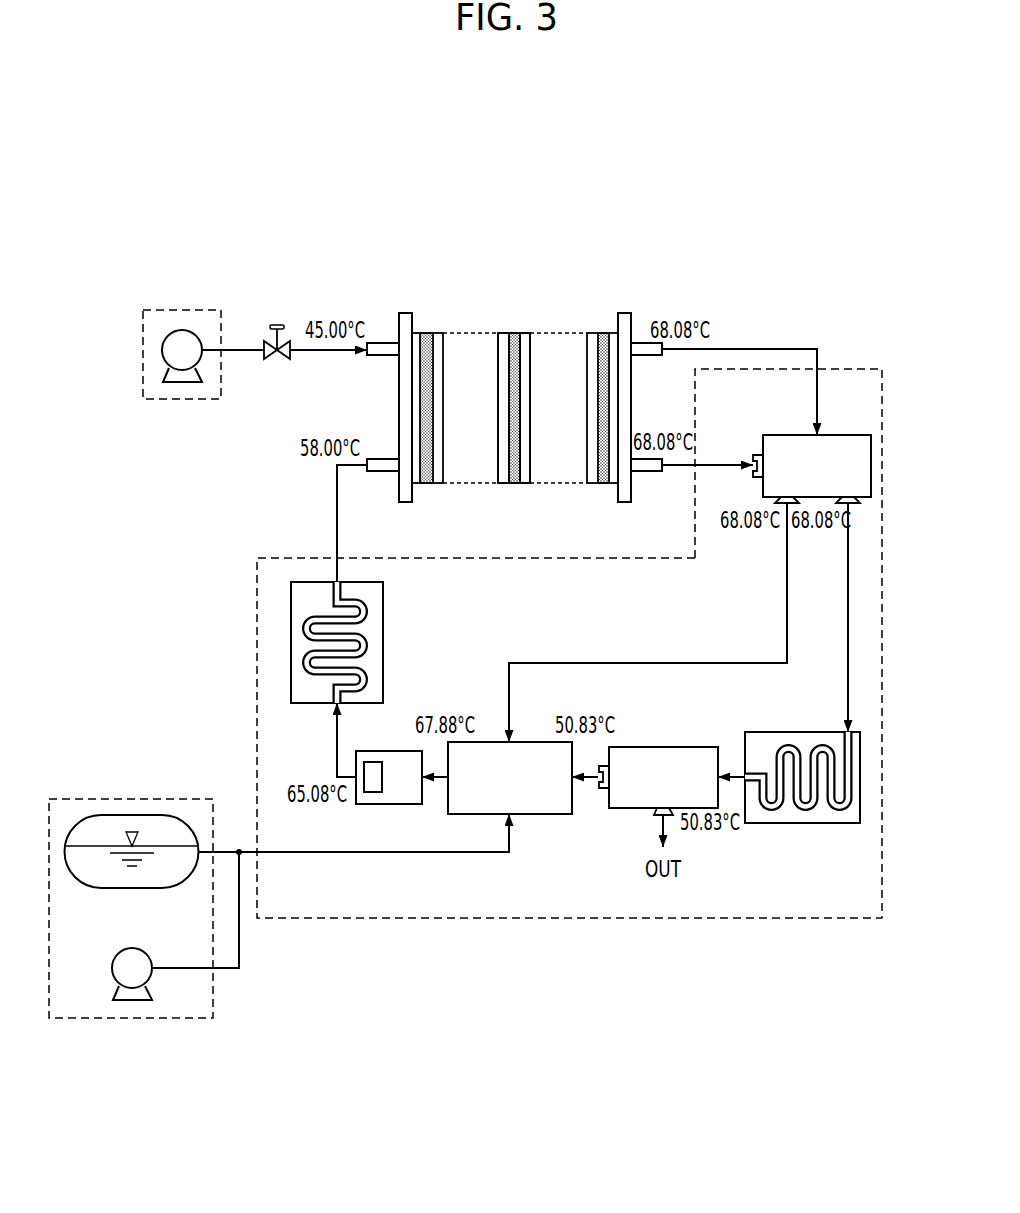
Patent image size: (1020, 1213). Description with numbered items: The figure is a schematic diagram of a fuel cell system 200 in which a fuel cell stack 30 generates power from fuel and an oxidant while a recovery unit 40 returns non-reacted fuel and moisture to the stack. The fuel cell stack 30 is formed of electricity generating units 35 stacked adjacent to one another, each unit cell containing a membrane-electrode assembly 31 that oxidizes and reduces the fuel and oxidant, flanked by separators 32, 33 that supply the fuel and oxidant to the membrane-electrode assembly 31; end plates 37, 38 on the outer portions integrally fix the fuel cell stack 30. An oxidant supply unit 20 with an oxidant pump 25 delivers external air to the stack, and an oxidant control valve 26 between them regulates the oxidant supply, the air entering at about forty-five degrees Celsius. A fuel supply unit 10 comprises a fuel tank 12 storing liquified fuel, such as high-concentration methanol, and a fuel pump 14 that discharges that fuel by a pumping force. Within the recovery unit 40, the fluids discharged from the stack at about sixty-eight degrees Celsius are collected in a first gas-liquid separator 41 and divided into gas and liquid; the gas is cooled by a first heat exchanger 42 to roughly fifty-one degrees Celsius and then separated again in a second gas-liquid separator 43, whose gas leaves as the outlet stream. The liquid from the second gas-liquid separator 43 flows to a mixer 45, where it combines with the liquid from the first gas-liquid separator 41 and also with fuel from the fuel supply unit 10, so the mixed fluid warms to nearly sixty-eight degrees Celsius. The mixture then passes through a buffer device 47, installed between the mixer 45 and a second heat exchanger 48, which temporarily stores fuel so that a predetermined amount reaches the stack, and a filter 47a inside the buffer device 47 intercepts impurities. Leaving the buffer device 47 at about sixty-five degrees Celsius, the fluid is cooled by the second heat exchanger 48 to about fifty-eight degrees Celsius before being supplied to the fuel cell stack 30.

The fuel supply unit 10 is at (125, 1018).
The fuel tank 12 is at (92, 815).
The fuel pump 14 is at (112, 966).
The oxidant supply unit 20 is at (158, 310).
The oxidant pump 25 is at (190, 330).
The oxidant control valve 26 is at (277, 325).
The fuel cell stack 30 is at (517, 340).
The membrane-electrode assembly 31 is at (515, 333).
The separator 32 is at (504, 333).
The separator 33 is at (525, 333).
The electricity generating unit 35 is at (511, 331).
The end plate 37 is at (399, 322).
The end plate 38 is at (633, 327).
The recovery unit 40 is at (568, 918).
The first gas-liquid separator 41 is at (851, 435).
The first heat exchanger 42 is at (806, 823).
The second gas-liquid separator 43 is at (660, 747).
The mixer 45 is at (548, 814).
The buffer device 47 is at (389, 762).
The filter 47a is at (372, 792).
The second heat exchanger 48 is at (383, 640).
The fuel cell system 200 is at (772, 240).